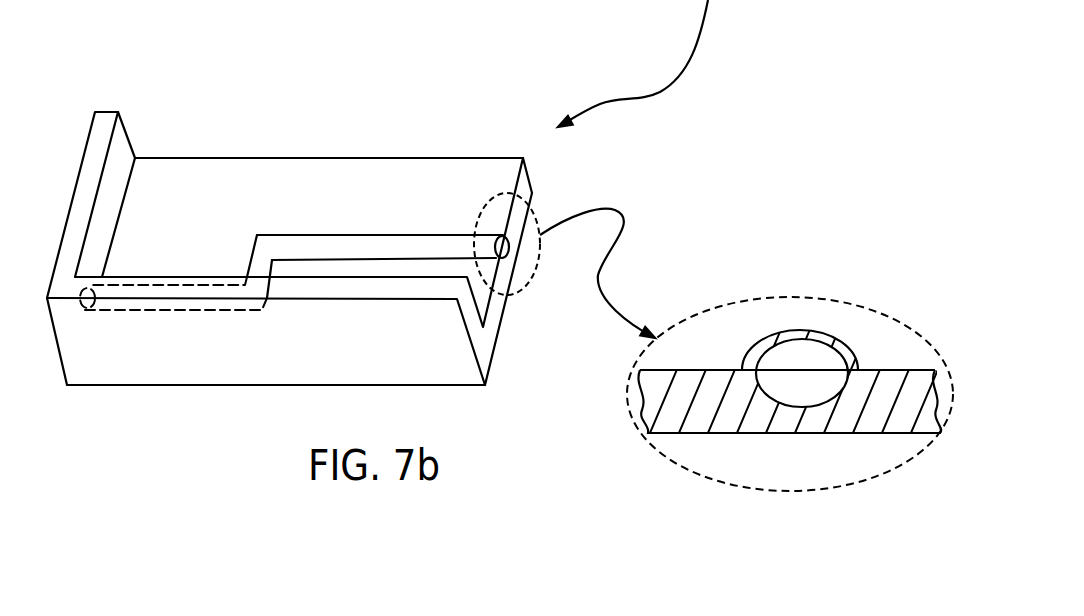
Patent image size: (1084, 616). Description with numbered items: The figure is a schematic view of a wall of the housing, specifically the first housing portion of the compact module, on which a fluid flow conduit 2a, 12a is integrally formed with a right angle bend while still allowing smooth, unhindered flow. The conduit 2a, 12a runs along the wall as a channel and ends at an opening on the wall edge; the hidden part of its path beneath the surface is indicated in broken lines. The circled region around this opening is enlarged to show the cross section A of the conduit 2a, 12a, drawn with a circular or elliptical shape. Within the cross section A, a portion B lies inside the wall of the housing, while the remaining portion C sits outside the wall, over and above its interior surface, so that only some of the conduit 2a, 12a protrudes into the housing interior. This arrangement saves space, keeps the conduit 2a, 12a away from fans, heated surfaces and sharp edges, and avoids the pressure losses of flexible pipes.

The fluid flow conduit 2a is at (760, 299).
The fluid flow conduit 12a is at (765, 349).
The cross section A is at (502, 252).
The portion of cross section within the walls B is at (795, 387).
The remaining portion of cross section outside the walls C is at (805, 362).